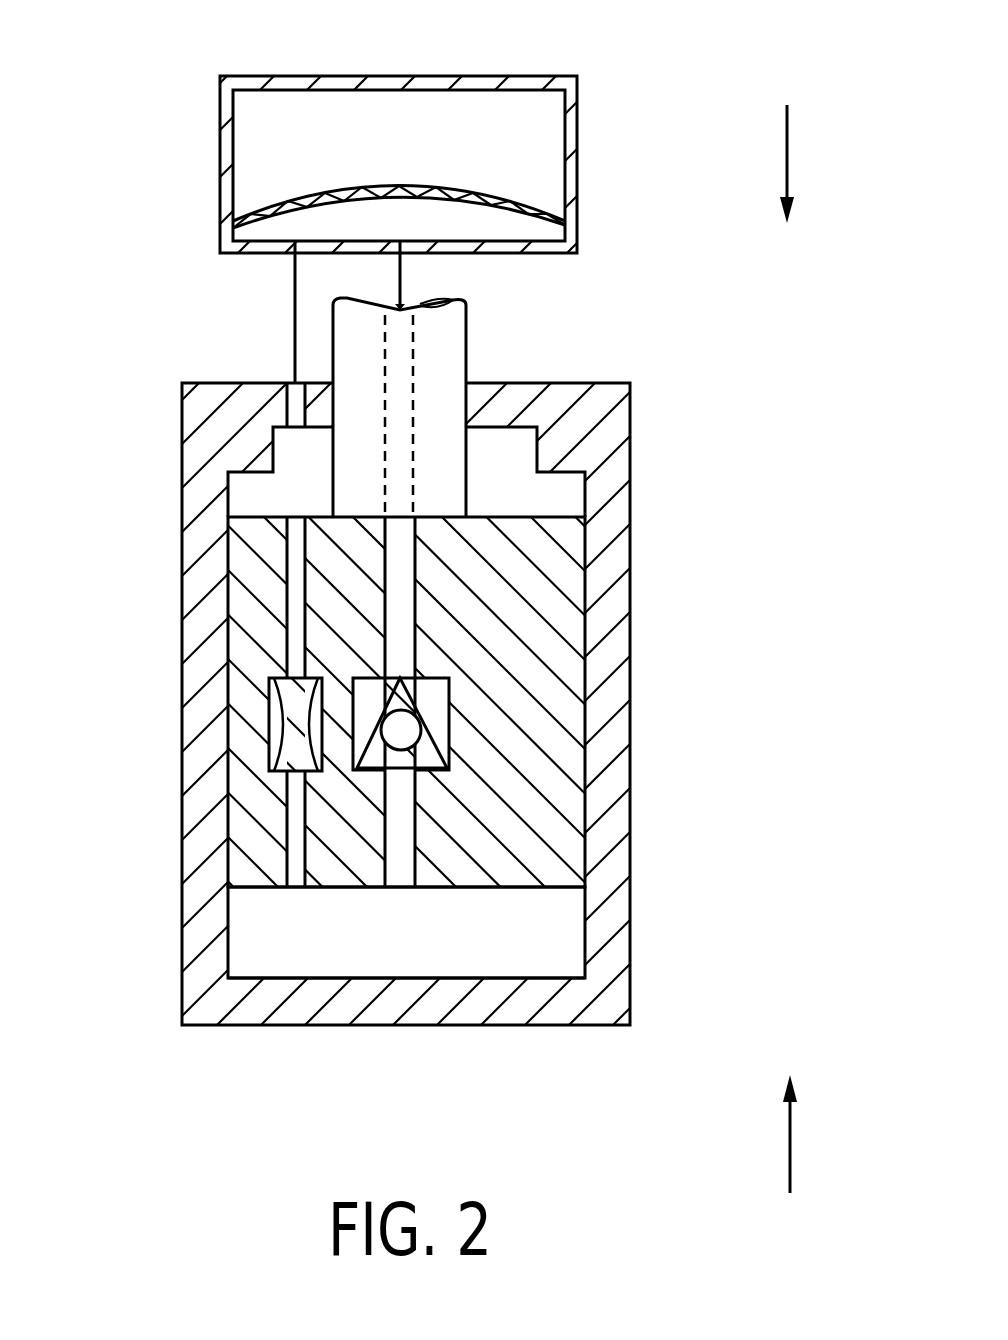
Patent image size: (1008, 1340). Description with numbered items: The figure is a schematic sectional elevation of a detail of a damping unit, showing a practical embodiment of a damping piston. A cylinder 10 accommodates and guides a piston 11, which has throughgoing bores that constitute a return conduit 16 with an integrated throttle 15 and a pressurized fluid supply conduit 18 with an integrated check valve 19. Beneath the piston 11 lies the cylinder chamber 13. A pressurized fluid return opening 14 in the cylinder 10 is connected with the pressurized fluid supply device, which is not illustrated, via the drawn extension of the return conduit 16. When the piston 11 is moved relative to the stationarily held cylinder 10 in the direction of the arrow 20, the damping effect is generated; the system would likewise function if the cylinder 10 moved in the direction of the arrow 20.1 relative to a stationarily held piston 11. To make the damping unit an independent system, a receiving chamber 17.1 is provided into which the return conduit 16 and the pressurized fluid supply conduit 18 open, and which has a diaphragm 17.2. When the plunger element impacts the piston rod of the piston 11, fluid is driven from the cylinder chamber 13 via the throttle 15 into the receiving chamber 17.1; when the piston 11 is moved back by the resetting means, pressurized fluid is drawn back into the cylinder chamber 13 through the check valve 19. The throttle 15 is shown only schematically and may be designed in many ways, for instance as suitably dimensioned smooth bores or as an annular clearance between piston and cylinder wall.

The cylinder 10 is at (616, 770).
The piston 11 is at (567, 837).
The cylinder chamber 13 is at (563, 943).
The pressurized fluid return opening 14 is at (293, 398).
The throttle 15 is at (294, 735).
The return conduit 16 is at (290, 278).
The receiving chamber 17.1 is at (519, 110).
The diaphragm 17.2 is at (486, 190).
The pressurized fluid supply conduit 18 is at (403, 272).
The check valve 19 is at (437, 707).
The arrow 20 is at (787, 135).
The arrow 20.1 is at (790, 1105).